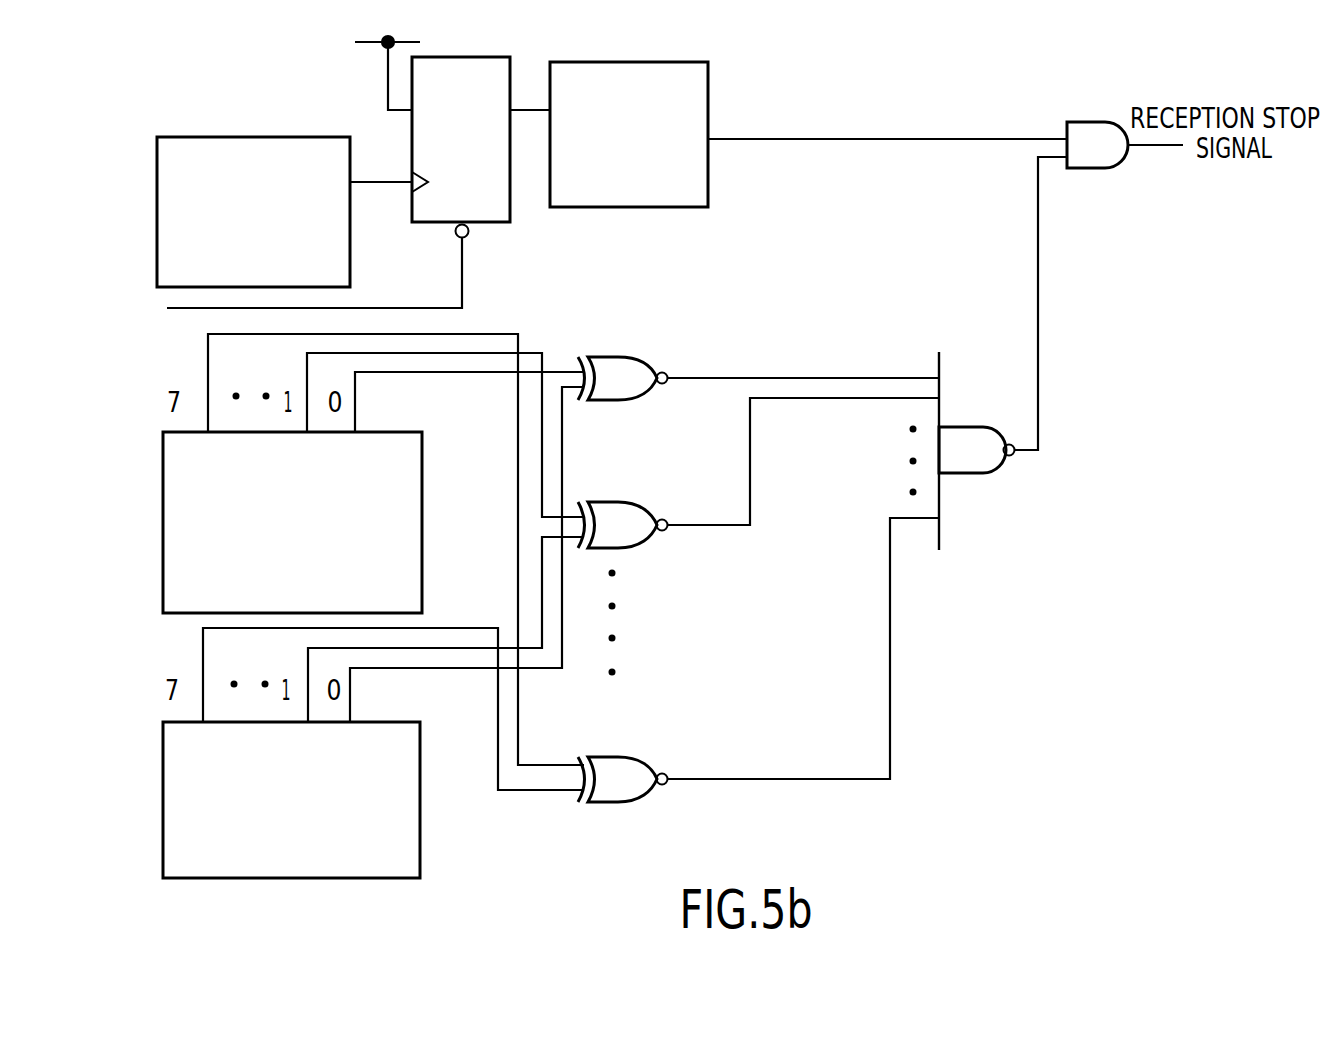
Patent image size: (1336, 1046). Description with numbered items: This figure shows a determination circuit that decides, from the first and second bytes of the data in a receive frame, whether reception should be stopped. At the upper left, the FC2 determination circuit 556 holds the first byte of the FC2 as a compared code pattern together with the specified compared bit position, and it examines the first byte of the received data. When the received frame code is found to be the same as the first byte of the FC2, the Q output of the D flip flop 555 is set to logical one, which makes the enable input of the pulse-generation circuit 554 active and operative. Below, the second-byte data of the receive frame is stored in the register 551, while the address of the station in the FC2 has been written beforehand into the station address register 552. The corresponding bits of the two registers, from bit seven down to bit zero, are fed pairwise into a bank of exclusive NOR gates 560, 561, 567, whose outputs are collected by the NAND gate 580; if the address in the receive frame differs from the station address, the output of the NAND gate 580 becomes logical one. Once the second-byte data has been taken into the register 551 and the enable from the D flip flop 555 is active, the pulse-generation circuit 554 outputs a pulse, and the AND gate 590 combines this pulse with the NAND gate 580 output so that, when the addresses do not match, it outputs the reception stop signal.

The register 551 is at (313, 598).
The address register 552 is at (265, 862).
The pulse-generation circuit 554 is at (629, 134).
The D flip flop 555 is at (461, 147).
The FC2 determination circuit 556 is at (230, 275).
The exclusive NOR gate 560 is at (616, 357).
The exclusive NOR gate 561 is at (613, 502).
The exclusive NOR gate 567 is at (612, 757).
The NAND gate 580 is at (953, 427).
The AND gate 590 is at (1083, 122).